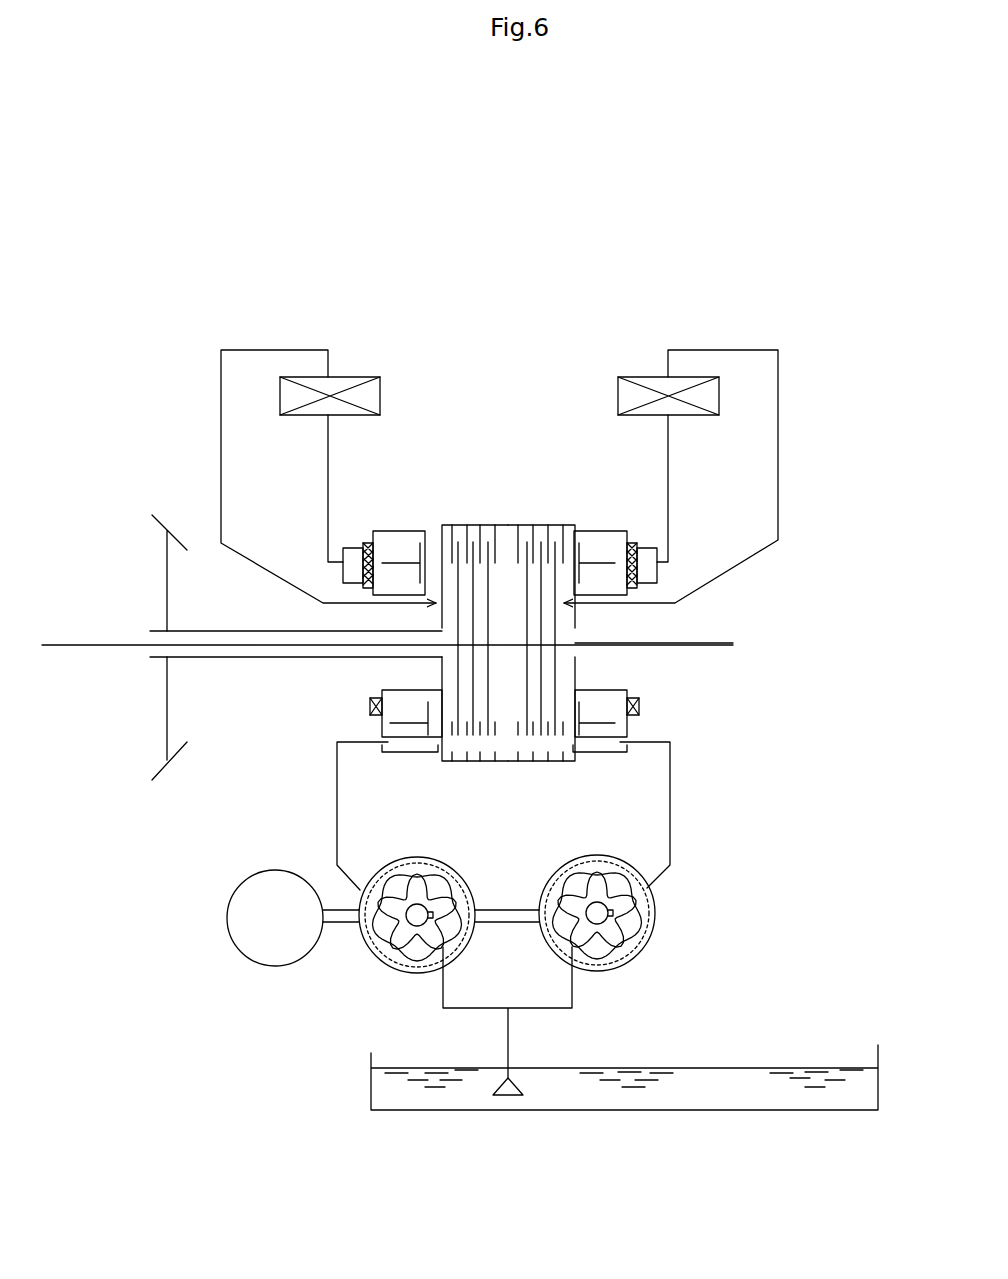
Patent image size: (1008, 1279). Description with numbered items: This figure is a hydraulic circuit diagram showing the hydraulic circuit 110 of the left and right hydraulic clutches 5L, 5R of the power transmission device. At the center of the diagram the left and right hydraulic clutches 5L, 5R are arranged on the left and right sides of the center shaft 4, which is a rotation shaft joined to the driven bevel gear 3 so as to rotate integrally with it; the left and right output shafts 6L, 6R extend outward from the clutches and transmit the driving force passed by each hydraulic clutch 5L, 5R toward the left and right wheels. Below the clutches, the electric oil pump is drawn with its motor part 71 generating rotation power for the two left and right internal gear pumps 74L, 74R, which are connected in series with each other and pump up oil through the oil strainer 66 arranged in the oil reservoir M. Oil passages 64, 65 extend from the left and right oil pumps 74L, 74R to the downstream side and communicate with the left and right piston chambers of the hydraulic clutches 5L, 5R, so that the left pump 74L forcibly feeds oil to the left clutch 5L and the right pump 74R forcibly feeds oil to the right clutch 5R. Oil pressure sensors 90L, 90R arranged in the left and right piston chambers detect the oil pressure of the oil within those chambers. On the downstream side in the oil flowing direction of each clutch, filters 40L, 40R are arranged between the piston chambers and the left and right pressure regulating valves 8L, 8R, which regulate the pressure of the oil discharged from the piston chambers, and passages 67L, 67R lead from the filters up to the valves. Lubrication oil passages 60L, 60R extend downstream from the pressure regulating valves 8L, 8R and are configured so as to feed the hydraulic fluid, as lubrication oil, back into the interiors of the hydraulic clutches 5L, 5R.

The hydraulic circuit 110 is at (204, 328).
The driven bevel gear 3 is at (167, 522).
The center shaft 4 is at (235, 630).
The left hydraulic clutch 5L is at (474, 508).
The right hydraulic clutch 5R is at (534, 503).
The left output shaft 6L is at (140, 641).
The right output shaft 6R is at (680, 641).
The left pressure regulating valve 8L is at (352, 377).
The right pressure regulating valve 8R is at (645, 377).
The left filter 40L is at (343, 565).
The right filter 40R is at (657, 573).
The left lubrication oil passage 60L is at (221, 413).
The right lubrication oil passage 60R is at (778, 418).
The oil passage 64 is at (337, 828).
The oil passage 65 is at (670, 818).
The oil strainer 66 is at (515, 1085).
The left branch passage 67L is at (328, 455).
The right branch passage 67R is at (668, 458).
The motor part 71 is at (295, 937).
The left internal gear pump 74L is at (405, 968).
The right internal gear pump 74R is at (625, 965).
The left oil pressure sensor 90L is at (370, 707).
The right oil pressure sensor 90R is at (640, 705).
The oil reservoir M is at (371, 1087).